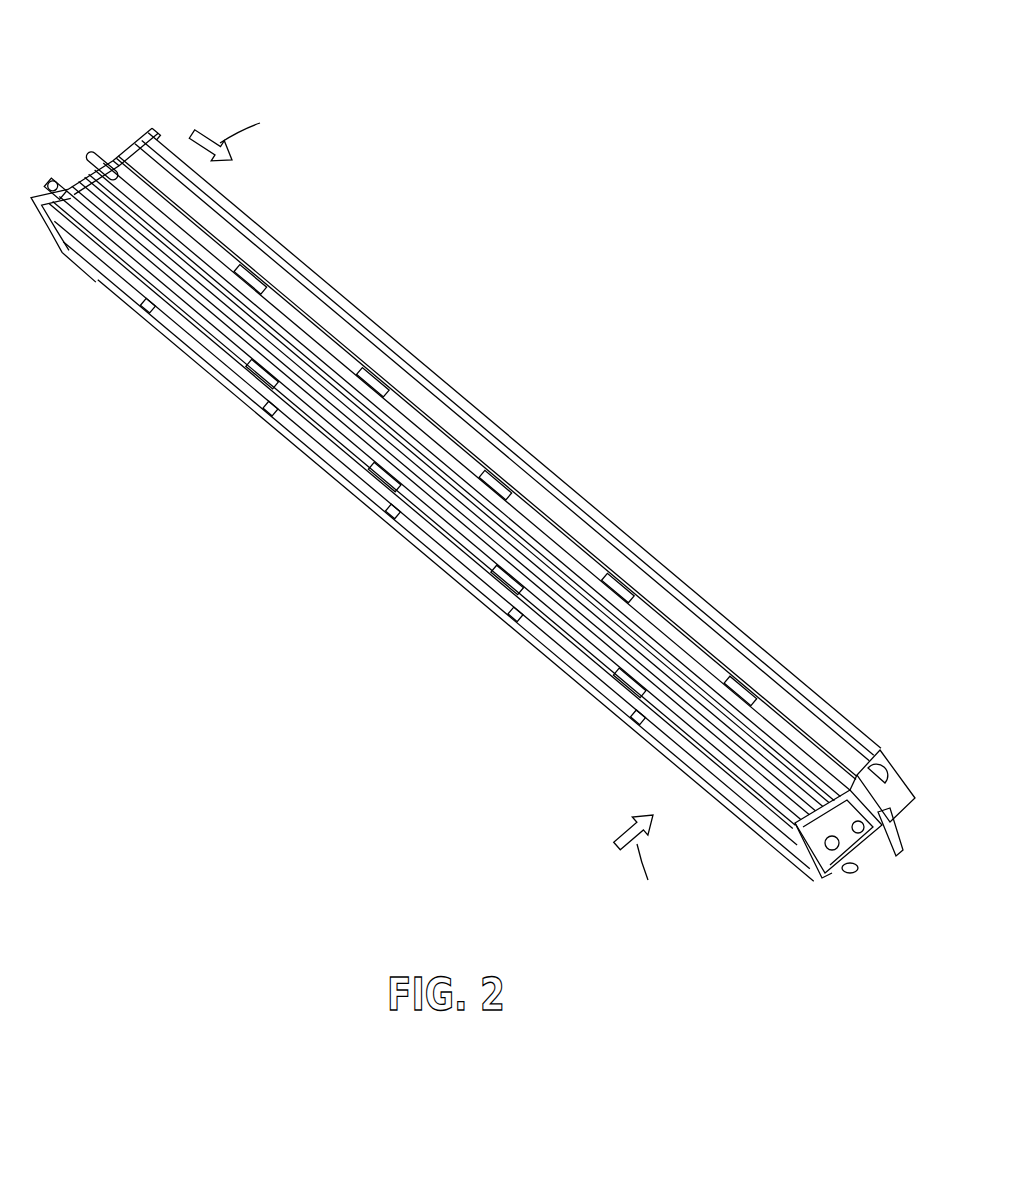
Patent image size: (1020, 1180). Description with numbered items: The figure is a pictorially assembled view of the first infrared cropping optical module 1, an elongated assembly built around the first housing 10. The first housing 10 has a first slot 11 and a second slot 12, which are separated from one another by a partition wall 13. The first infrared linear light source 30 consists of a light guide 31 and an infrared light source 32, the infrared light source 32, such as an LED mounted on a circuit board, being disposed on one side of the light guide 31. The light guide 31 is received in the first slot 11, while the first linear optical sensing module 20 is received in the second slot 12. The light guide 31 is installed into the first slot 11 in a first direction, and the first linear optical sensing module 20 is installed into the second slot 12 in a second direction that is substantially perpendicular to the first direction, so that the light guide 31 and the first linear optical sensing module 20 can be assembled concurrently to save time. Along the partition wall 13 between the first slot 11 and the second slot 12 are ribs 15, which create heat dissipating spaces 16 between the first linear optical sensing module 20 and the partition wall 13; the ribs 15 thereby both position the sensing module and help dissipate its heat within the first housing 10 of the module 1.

The first infrared cropping optical module 1 is at (452, 42).
The first housing 10 is at (593, 508).
The first slot 11 is at (320, 288).
The second slot 12 is at (498, 620).
The partition wall 13 is at (422, 408).
The ribs 15 is at (490, 483).
The heat dissipating spaces 16 is at (440, 437).
The first linear optical sensing module 20 is at (378, 488).
The first infrared linear light source 30 is at (620, 230).
The light guide 31 is at (210, 218).
The infrared light source 32 is at (131, 150).